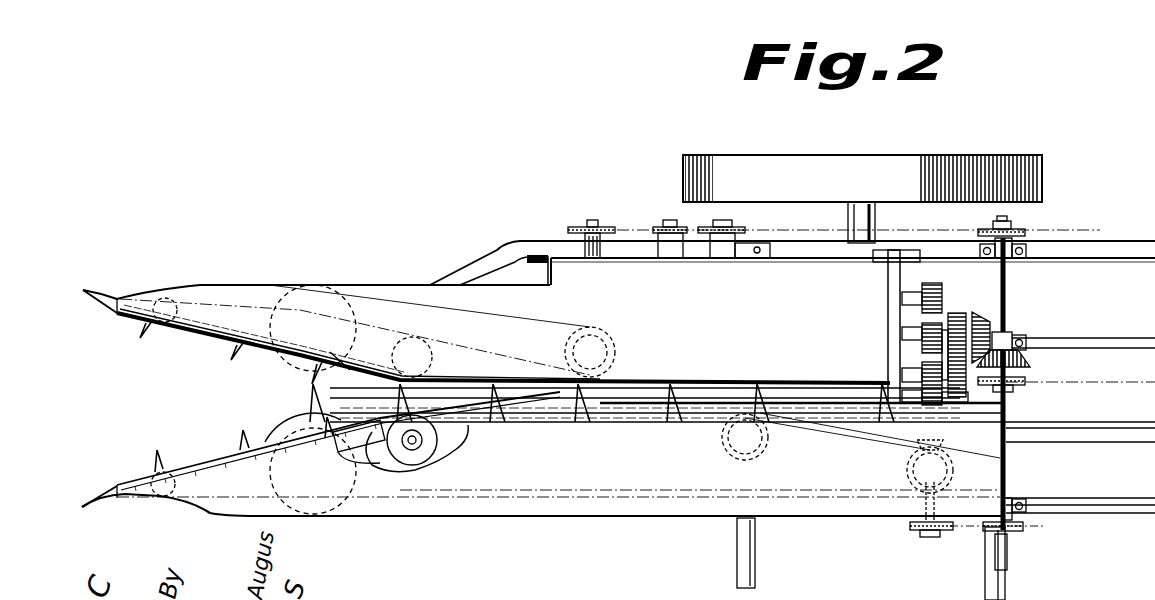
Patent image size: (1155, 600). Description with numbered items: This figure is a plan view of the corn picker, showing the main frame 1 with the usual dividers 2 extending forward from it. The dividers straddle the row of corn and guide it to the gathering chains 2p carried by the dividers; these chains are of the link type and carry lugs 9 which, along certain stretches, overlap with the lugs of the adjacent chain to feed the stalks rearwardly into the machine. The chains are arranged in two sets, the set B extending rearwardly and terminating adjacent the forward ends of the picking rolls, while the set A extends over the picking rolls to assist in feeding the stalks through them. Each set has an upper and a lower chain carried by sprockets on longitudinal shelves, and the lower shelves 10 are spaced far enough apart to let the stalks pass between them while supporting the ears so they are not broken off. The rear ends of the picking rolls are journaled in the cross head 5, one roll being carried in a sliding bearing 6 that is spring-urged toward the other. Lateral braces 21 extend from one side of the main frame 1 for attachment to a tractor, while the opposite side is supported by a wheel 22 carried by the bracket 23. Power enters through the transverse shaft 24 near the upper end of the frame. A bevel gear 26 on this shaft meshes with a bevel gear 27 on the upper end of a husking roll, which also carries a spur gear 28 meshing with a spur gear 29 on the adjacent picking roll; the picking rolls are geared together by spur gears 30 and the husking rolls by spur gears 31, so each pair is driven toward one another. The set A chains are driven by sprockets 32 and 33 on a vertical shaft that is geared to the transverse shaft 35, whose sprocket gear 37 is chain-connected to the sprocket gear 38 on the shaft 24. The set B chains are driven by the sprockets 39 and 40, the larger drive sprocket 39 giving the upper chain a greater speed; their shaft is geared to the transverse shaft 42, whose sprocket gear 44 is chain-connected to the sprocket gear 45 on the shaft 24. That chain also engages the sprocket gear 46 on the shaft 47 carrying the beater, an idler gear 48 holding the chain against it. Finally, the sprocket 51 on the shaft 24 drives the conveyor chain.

The main frame 1 is at (1090, 270).
The dividers 2 is at (102, 307).
The gathering chains 2p is at (455, 380).
The cross head 5 is at (886, 284).
The sliding bearing 6 is at (622, 177).
The lugs 9 is at (232, 346).
The lower shelves 10 is at (352, 374).
The lateral braces 21 is at (758, 566).
The wheel 22 is at (988, 156).
The bracket 23 is at (879, 232).
The transverse shaft 24 is at (1008, 294).
The bevel gear 26 is at (1032, 364).
The bevel gear 27 is at (995, 318).
The spur gear 28 is at (958, 315).
The spur gear 29 is at (955, 402).
The spur gears 30 is at (920, 400).
The spur gears 31 is at (920, 300).
The sprocket 32 is at (720, 442).
The sprocket 33 is at (752, 453).
The transverse shaft 35 is at (905, 530).
The sprocket gear 37 is at (968, 538).
The sprocket gear 38 is at (1030, 528).
The drive sprocket 39 is at (592, 334).
The sprocket 40 is at (614, 343).
The transverse shaft 42 is at (594, 220).
The sprocket gear 44 is at (580, 227).
The sprocket gear 45 is at (1030, 237).
The sprocket gear 46 is at (748, 230).
The shaft 47 is at (725, 220).
The idler gear 48 is at (662, 221).
The sprocket 51 is at (1020, 390).
The gathering chain set a A is at (264, 440).
The gathering chain set b B is at (280, 356).